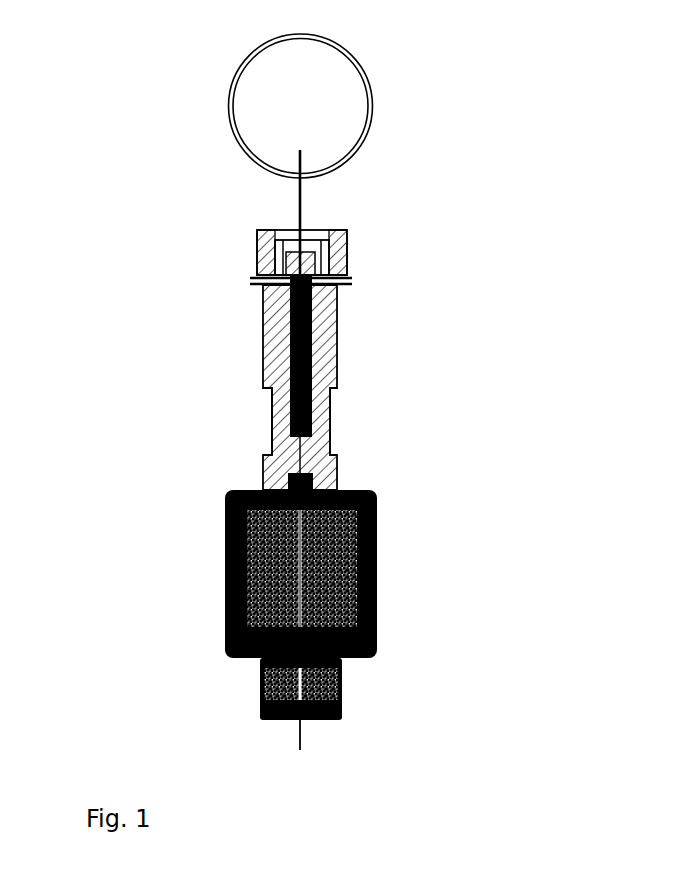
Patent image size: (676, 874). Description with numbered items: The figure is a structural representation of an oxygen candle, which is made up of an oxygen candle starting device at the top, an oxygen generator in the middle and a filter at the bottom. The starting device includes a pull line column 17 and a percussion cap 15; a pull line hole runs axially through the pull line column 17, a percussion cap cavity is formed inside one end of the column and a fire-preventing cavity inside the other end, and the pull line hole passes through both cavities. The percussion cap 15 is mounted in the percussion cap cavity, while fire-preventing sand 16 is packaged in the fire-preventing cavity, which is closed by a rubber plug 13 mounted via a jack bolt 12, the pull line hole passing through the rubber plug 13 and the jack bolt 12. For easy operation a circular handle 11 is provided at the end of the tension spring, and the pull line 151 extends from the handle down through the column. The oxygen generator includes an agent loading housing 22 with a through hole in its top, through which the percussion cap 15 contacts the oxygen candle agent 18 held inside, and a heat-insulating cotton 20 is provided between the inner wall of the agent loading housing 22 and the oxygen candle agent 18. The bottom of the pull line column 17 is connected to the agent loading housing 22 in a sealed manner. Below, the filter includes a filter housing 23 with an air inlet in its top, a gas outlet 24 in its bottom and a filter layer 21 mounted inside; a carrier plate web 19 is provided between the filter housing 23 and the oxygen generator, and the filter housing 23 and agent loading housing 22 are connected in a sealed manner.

The circular handle 11 is at (365, 134).
The rod 151 is at (300, 190).
The jack bolt 12 is at (285, 262).
The rubber plug 13 is at (345, 268).
The fire-preventing sand 16 is at (263, 335).
The pull line column 17 is at (272, 422).
The percussion cap 15 is at (313, 470).
The oxygen candle agent 18 is at (290, 542).
The heat-insulating cotton 20 is at (225, 608).
The agent loading housing 22 is at (377, 521).
The carrier plate web 19 is at (377, 645).
The filter layer 21 is at (342, 673).
The filter housing 23 is at (260, 700).
The gas outlet 24 is at (342, 710).